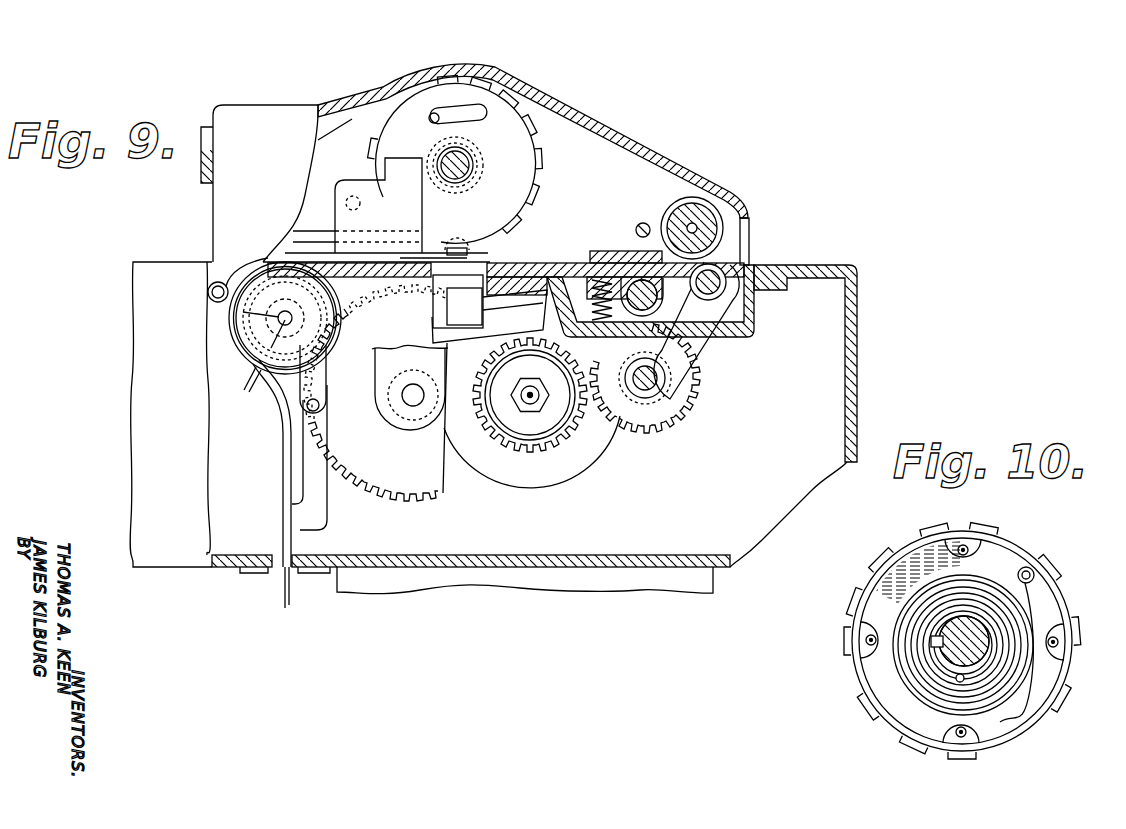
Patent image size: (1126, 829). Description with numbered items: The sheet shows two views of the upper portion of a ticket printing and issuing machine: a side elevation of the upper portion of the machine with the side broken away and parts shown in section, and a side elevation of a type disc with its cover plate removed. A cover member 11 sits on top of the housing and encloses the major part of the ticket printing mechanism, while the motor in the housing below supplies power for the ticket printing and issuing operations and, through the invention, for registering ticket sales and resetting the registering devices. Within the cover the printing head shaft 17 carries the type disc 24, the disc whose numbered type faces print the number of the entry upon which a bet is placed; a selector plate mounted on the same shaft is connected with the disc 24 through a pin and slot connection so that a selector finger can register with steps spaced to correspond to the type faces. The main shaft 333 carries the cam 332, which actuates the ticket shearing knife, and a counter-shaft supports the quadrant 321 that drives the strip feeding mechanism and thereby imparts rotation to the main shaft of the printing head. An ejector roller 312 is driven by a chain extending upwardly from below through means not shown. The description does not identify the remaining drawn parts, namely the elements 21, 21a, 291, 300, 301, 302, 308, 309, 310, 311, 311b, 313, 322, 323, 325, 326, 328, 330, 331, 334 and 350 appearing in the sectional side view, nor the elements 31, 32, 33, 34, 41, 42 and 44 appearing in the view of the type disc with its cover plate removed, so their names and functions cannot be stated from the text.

In FIG. 9, the cover member 11 is at (613, 130).
In FIG. 9, the printing head shaft 17 is at (467, 152).
In FIG. 10, the printing head shaft 17 is at (988, 650).
In FIG. 9, the gear 21 is at (440, 148).
In FIG. 9, the detent 21a is at (471, 246).
In FIG. 9, the type disc 24 is at (386, 126).
In FIG. 9, the strip 291 is at (268, 240).
In FIG. 9, the spring strip 300 is at (282, 503).
In FIG. 9, the housing 301 is at (287, 542).
In FIG. 9, the band 302 is at (262, 358).
In FIG. 9, the bar 308 is at (600, 258).
In FIG. 9, the screw 309 is at (615, 282).
In FIG. 9, the plate 310 is at (575, 258).
In FIG. 9, the block 311 is at (547, 275).
In FIG. 9, the spring 311b is at (585, 300).
In FIG. 9, the ejector roller 312 is at (715, 220).
In FIG. 9, the wall 313 is at (752, 250).
In FIG. 9, the quadrant 321 is at (411, 469).
In FIG. 9, the disk 322 is at (272, 323).
In FIG. 9, the hub 323 is at (280, 317).
In FIG. 9, the strip end 325 is at (253, 362).
In FIG. 9, the toothed wheel 326 is at (285, 318).
In FIG. 9, the pin 328 is at (222, 284).
In FIG. 9, the pivot pin 330 is at (662, 298).
In FIG. 9, the arm 331 is at (680, 352).
In FIG. 9, the cam 332 is at (670, 389).
In FIG. 9, the main shaft 333 is at (668, 396).
In FIG. 9, the pin 334 is at (728, 282).
In FIG. 9, the block 350 is at (462, 288).
In FIG. 10, the spring 31 is at (948, 662).
In FIG. 10, the key 32 is at (935, 645).
In FIG. 10, the lug screw 33 is at (870, 643).
In FIG. 10, the ring 34 is at (1007, 563).
In FIG. 10, the spring wire 41 is at (1040, 618).
In FIG. 10, the pin 42 is at (1035, 574).
In FIG. 10, the pin 44 is at (961, 682).